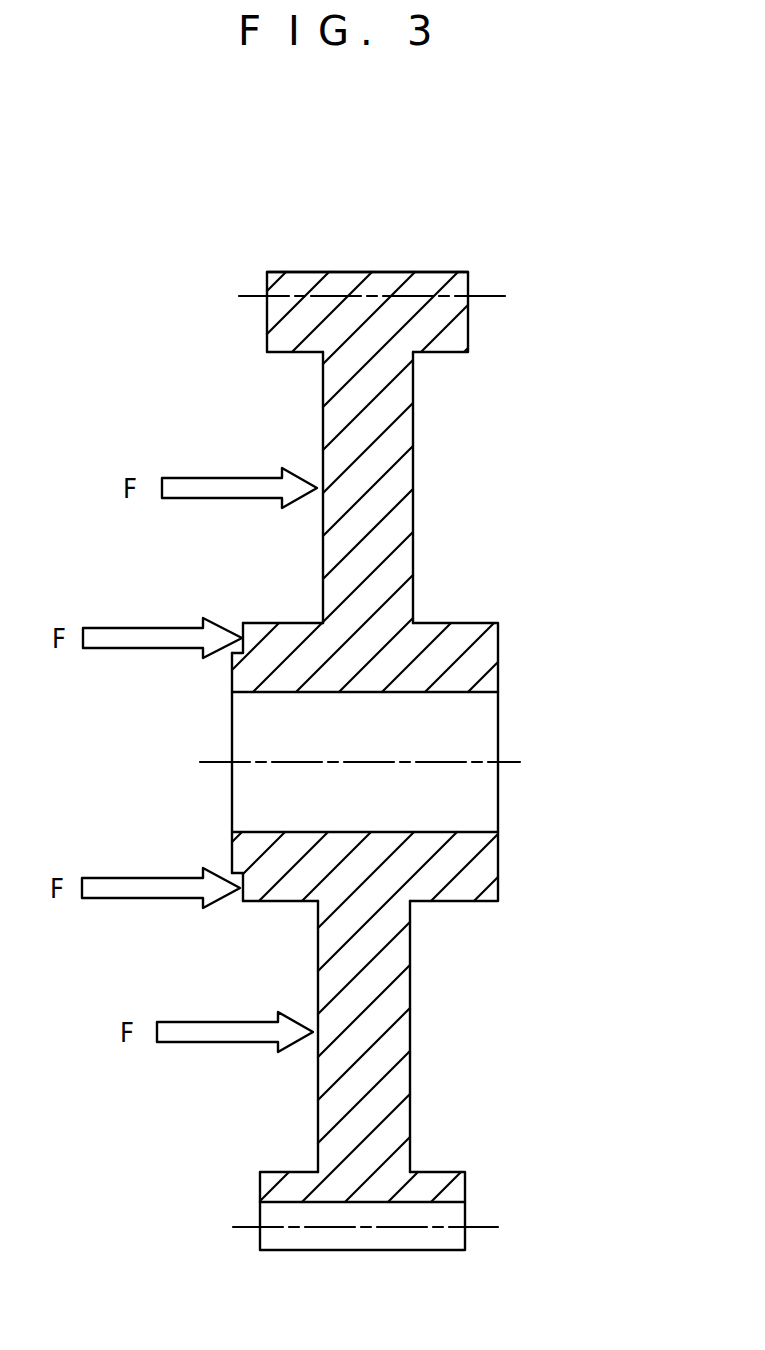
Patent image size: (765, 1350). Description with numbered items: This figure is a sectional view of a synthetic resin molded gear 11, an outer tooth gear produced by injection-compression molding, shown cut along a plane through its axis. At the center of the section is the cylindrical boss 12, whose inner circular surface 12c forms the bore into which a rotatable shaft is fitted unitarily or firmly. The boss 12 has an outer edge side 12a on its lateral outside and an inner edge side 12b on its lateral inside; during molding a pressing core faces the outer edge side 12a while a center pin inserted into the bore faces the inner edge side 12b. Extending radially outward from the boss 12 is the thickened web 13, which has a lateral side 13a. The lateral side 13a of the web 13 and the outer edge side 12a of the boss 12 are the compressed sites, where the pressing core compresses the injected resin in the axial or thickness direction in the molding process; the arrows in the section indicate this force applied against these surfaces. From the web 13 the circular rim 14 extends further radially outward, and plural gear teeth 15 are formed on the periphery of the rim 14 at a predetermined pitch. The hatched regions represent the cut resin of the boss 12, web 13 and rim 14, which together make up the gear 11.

The synthetic resin molded gear 11 is at (360, 811).
The cylindrical boss 12 is at (485, 660).
The outer edge side of the boss 12a is at (243, 622).
The inner edge side of the boss 12b is at (232, 680).
The inner circular surface of the boss 12c is at (285, 692).
The web 13 is at (395, 493).
The lateral side of the web 13a is at (320, 422).
The circular rim 14 is at (422, 337).
The gear teeth 15 is at (392, 285).